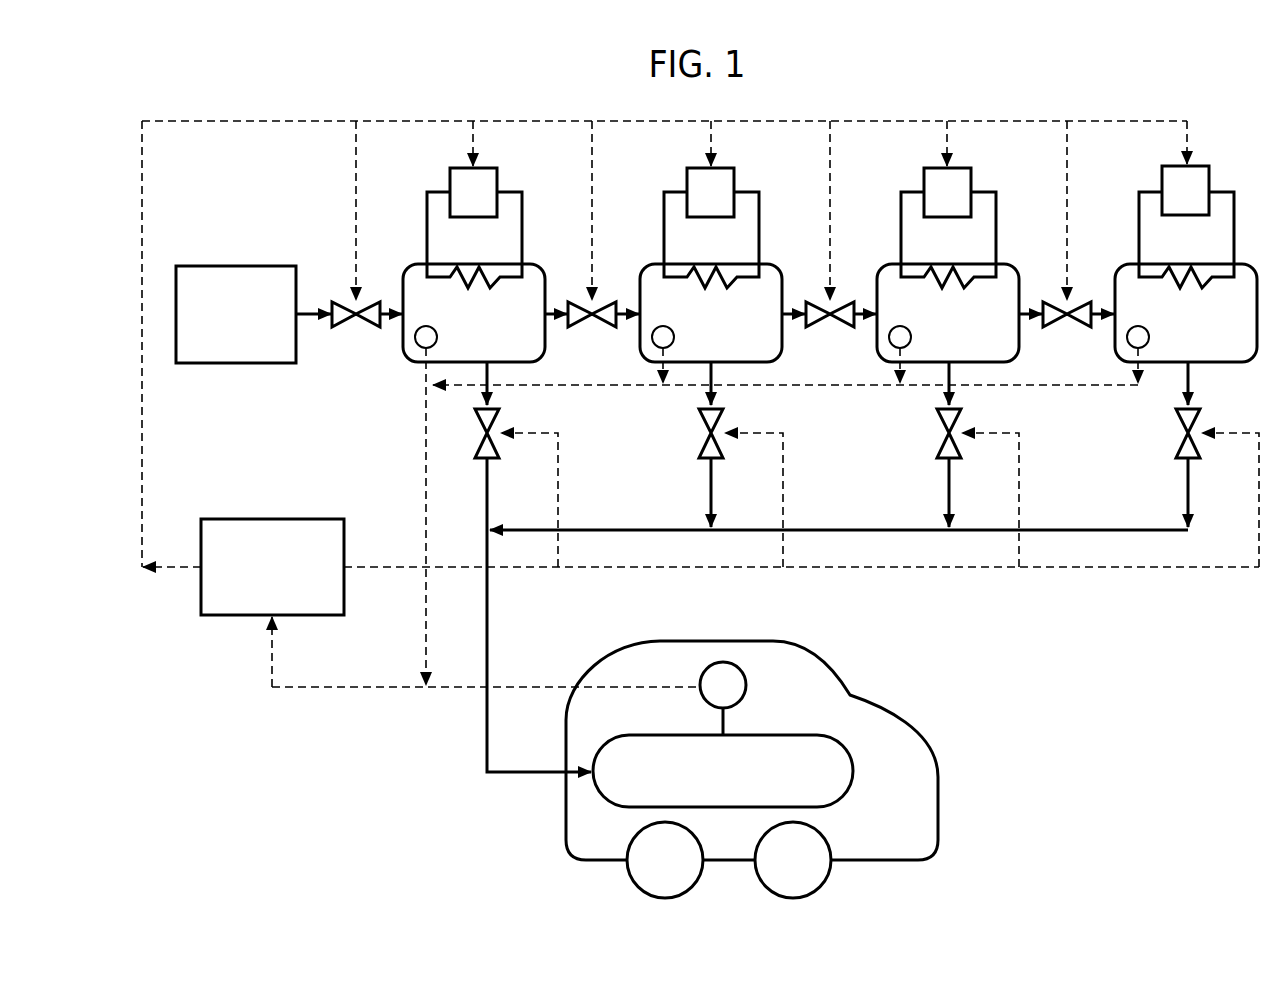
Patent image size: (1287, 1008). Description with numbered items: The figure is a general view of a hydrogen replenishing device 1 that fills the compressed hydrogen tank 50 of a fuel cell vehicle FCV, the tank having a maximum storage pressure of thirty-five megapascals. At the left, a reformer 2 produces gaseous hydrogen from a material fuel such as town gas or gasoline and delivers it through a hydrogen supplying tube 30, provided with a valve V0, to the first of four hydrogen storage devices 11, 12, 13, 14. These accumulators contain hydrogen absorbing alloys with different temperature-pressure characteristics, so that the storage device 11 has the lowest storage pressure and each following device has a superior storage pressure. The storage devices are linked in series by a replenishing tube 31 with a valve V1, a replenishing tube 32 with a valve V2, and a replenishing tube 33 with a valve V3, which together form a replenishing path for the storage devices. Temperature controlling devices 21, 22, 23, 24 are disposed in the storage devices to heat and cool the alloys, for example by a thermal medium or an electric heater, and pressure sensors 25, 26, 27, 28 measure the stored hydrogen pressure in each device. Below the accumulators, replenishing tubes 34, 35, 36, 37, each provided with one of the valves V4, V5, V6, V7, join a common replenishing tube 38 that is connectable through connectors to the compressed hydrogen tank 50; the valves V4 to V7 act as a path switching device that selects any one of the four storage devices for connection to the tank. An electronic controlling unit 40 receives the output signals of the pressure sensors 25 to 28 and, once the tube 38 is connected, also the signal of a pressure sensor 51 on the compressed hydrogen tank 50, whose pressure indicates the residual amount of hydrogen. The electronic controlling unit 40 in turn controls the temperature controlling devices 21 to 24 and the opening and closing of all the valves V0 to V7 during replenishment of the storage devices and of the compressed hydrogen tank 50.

The hydrogen replenishing device 1 is at (1133, 612).
The reformer 2 is at (205, 266).
The hydrogen storage device 11 is at (540, 264).
The hydrogen storage device 12 is at (777, 264).
The hydrogen storage device 13 is at (1014, 264).
The hydrogen storage device 14 is at (1254, 264).
The temperature controlling device 21 is at (498, 178).
The temperature controlling device 22 is at (735, 178).
The temperature controlling device 23 is at (972, 178).
The temperature controlling device 24 is at (1210, 178).
The pressure sensor 25 is at (438, 337).
The pressure sensor 26 is at (675, 337).
The pressure sensor 27 is at (912, 337).
The pressure sensor 28 is at (1150, 337).
The hydrogen supplying tube 30 is at (307, 311).
The replenishing tube 31 is at (620, 311).
The replenishing tube 32 is at (858, 311).
The replenishing tube 33 is at (1095, 311).
The replenishing tube 34 is at (489, 492).
The replenishing tube 35 is at (713, 492).
The replenishing tube 36 is at (951, 492).
The replenishing tube 37 is at (1190, 492).
The replenishing tube 38 is at (489, 637).
The electronic controlling unit 40 is at (325, 519).
The compressed hydrogen tank 50 is at (853, 790).
The pressure sensor 51 is at (744, 698).
The valve V0 is at (362, 329).
The valve V1 is at (597, 329).
The valve V2 is at (835, 329).
The valve V3 is at (1072, 329).
The valve V4 is at (499, 424).
The valve V5 is at (699, 424).
The valve V6 is at (937, 424).
The valve V7 is at (1176, 424).
The fuel cell vehicle FCV is at (853, 697).